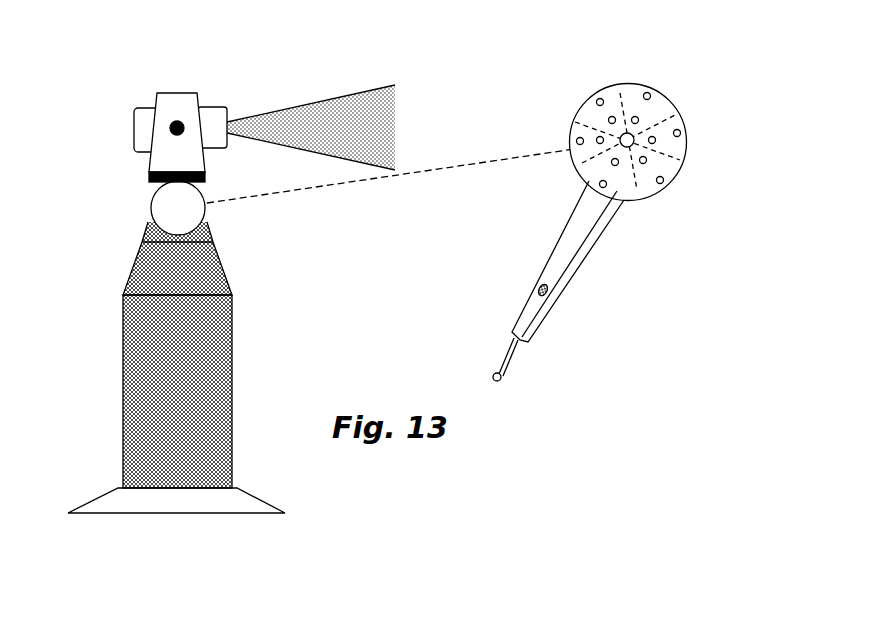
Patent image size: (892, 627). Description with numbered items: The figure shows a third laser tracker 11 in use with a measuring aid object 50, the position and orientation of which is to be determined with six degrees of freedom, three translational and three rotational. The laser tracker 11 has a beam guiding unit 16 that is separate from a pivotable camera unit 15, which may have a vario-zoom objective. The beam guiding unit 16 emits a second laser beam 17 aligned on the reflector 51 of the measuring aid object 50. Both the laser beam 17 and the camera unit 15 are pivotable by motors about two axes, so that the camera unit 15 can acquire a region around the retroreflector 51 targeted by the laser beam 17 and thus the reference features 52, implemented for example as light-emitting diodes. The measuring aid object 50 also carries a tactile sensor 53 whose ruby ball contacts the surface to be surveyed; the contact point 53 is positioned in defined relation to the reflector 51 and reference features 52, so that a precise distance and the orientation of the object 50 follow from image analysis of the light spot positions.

The third laser tracker 11 is at (199, 58).
The camera unit 15 is at (145, 113).
The beam guiding unit 16 is at (162, 202).
The second laser beam 17 is at (477, 160).
The measuring aid object 50 is at (615, 56).
The reflector 51 is at (633, 143).
The reference features 52 is at (597, 99).
The tactile sensor 53 is at (502, 380).